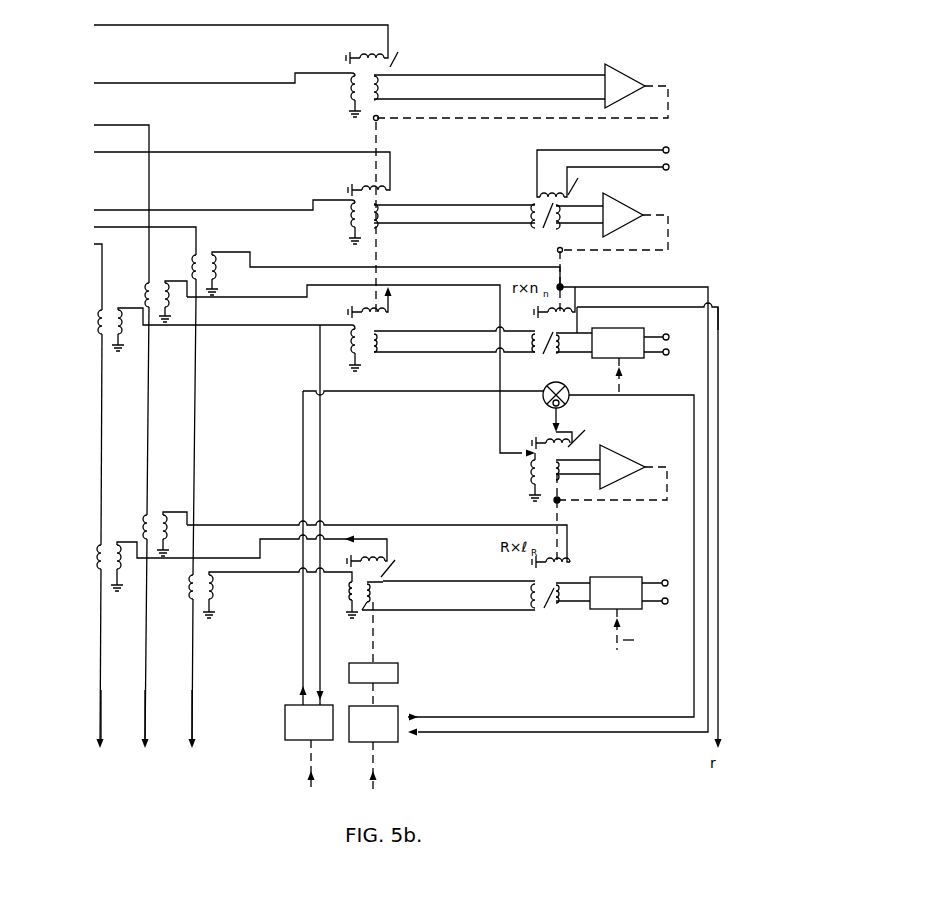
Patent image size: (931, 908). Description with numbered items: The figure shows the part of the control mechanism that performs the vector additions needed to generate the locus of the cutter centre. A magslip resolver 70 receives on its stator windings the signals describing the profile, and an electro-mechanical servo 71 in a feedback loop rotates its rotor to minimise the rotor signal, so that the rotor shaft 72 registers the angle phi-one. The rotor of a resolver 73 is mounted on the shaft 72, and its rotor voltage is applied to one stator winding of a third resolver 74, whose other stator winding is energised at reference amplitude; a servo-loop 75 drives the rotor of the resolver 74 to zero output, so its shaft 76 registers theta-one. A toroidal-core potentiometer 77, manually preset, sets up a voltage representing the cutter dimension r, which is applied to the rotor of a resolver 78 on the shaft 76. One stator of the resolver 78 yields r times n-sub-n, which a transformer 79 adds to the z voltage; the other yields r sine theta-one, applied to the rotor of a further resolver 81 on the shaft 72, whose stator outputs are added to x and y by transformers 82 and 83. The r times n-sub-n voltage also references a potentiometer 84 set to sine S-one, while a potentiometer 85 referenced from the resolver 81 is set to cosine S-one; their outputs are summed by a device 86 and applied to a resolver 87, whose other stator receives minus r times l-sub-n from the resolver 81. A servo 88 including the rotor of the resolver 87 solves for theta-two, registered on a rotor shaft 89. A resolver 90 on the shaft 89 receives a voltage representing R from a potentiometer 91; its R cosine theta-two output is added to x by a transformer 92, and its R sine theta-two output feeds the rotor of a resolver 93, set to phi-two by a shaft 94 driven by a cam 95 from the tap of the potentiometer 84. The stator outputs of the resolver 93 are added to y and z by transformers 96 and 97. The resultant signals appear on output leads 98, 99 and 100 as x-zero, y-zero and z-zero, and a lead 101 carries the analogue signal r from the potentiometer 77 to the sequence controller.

The magslip resolver 70 is at (350, 60).
The electro-mechanical servo 71 is at (620, 71).
The rotor shaft 72 is at (374, 118).
The resolver 73 is at (352, 189).
The third resolver 74 is at (547, 232).
The electro-mechanical servo-loop 75 is at (621, 208).
The shaft 76 is at (560, 237).
The toroidal-core potentiometer 77 is at (633, 329).
The resolver 78 is at (543, 330).
The transformer 79 is at (203, 248).
The further resolver 81 is at (361, 354).
The transformer 82 is at (157, 281).
The transformer 83 is at (104, 312).
The toroidal-core potentiometer 84 is at (390, 738).
The potentiometer 85 is at (289, 740).
The adding device 86 is at (545, 406).
The resolver 87 is at (543, 478).
The electro-mechanical servo 88 is at (626, 472).
The rotor shaft 89 is at (562, 518).
The further resolver 90 is at (545, 596).
The potentiometer 91 is at (605, 577).
The transformer 92 is at (148, 514).
The resolver 93 is at (377, 599).
The shaft 94 is at (376, 643).
The cam 95 is at (398, 675).
The transformer 96 is at (242, 640).
The transformer 97 is at (270, 521).
The output lead 98 is at (146, 722).
The output lead 99 is at (102, 722).
The output lead 100 is at (193, 722).
The lead 101 is at (717, 692).